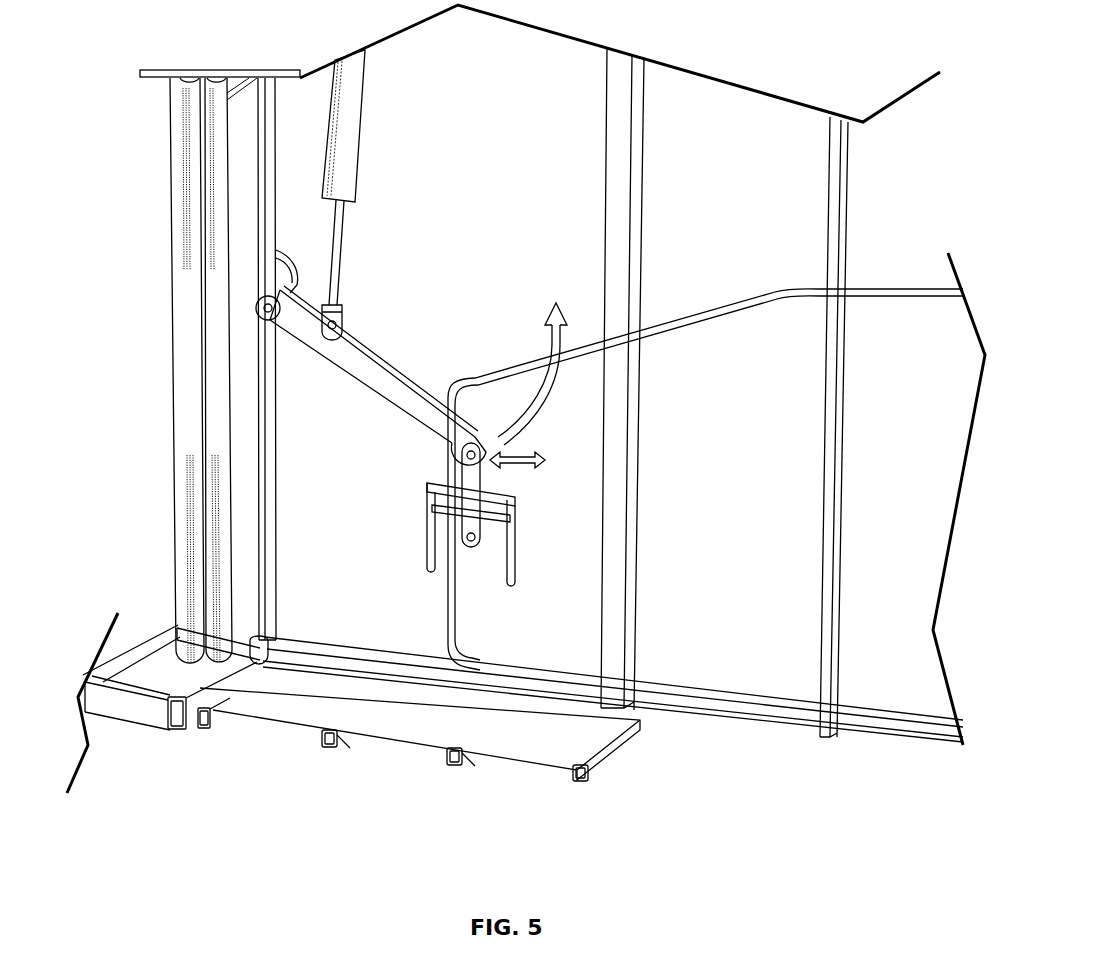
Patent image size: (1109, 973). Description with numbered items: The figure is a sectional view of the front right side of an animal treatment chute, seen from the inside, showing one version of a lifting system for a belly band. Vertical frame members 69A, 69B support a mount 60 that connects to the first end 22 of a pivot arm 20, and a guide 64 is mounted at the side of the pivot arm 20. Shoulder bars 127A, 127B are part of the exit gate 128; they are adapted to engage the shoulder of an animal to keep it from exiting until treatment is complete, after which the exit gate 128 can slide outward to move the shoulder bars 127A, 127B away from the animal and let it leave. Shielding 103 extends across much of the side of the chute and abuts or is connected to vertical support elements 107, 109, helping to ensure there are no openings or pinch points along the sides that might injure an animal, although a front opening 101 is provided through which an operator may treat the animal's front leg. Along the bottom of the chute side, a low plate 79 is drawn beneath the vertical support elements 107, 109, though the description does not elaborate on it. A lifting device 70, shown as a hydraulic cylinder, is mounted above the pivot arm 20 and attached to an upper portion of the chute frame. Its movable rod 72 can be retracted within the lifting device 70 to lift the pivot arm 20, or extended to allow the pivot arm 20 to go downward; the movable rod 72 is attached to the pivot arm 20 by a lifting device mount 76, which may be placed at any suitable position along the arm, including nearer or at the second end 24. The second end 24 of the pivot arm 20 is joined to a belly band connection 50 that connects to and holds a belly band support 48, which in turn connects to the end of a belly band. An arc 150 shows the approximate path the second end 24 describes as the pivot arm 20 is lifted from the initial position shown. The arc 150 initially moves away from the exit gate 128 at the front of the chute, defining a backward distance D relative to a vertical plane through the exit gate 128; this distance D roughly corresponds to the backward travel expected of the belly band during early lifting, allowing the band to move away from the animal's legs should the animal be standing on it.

The pivot arm 20 is at (373, 378).
The first end 22 is at (288, 305).
The second end 24 is at (462, 438).
The belly band support 48 is at (462, 466).
The belly band connection 50 is at (488, 450).
The mount 60 is at (276, 322).
The guide 64 is at (285, 268).
The vertical frame member 69A is at (270, 612).
The vertical frame member 69B is at (258, 645).
The lifting device 70 is at (347, 133).
The movable rod 72 is at (338, 228).
The lifting device mount 76 is at (342, 314).
The plate 79 is at (553, 730).
The front opening 101 is at (377, 632).
The shielding 103 is at (737, 377).
The vertical support element 107 is at (625, 198).
The vertical support element 109 is at (838, 202).
The shoulder bar 127A is at (215, 410).
The shoulder bar 127B is at (200, 455).
The exit gate 128 is at (215, 371).
The arc 150 is at (553, 315).
The backward distance D is at (515, 466).